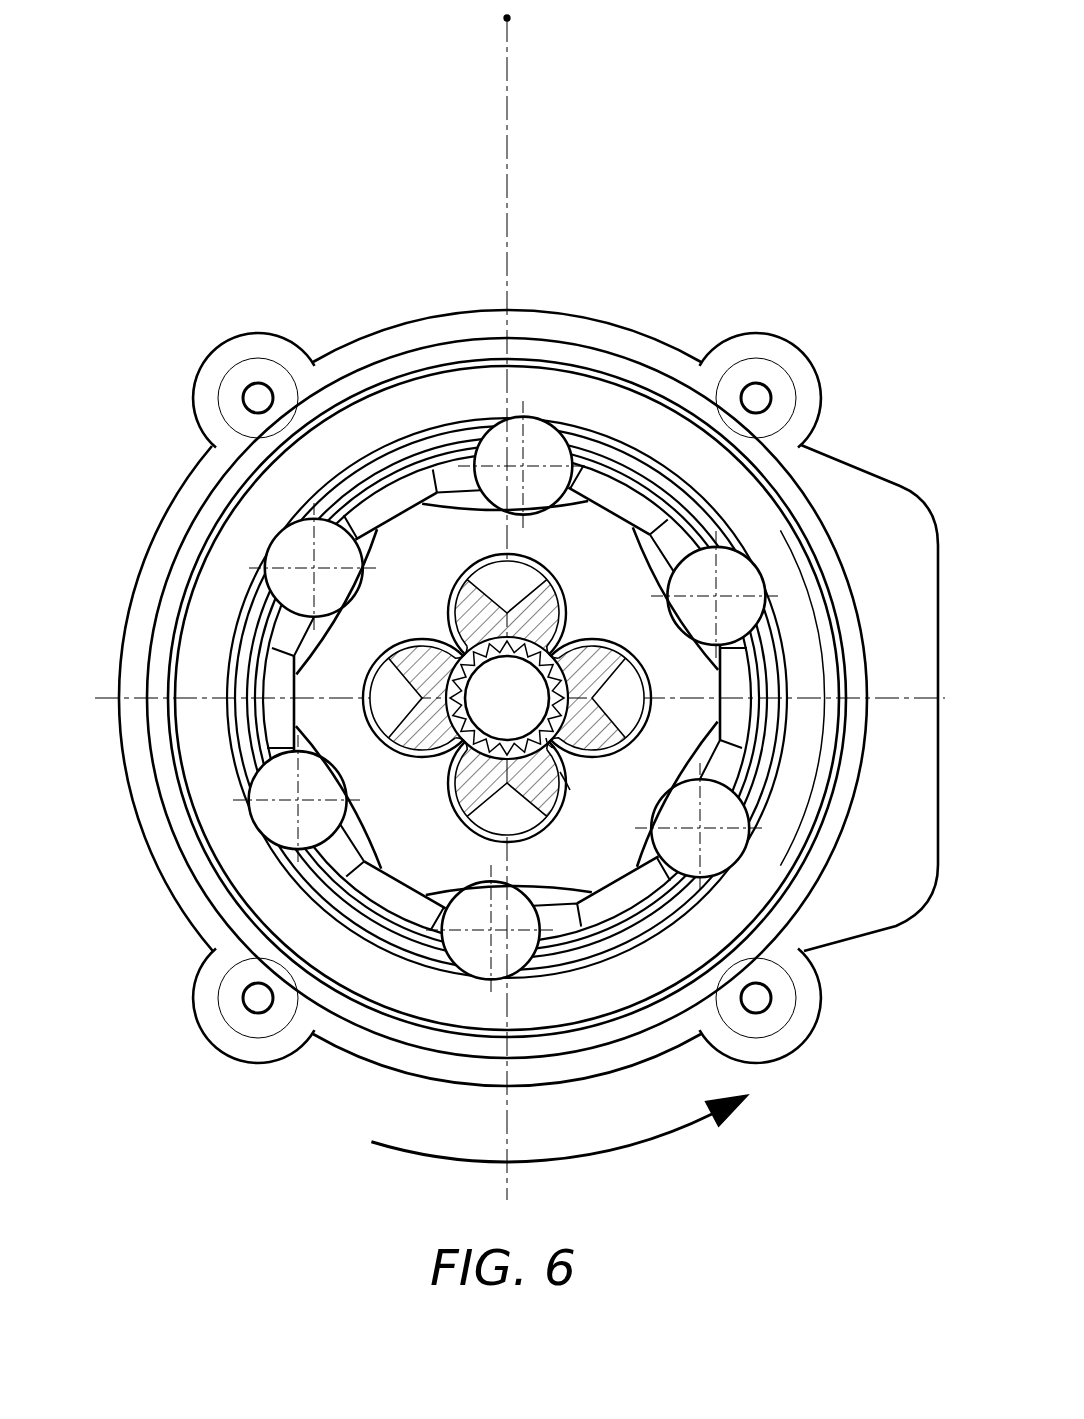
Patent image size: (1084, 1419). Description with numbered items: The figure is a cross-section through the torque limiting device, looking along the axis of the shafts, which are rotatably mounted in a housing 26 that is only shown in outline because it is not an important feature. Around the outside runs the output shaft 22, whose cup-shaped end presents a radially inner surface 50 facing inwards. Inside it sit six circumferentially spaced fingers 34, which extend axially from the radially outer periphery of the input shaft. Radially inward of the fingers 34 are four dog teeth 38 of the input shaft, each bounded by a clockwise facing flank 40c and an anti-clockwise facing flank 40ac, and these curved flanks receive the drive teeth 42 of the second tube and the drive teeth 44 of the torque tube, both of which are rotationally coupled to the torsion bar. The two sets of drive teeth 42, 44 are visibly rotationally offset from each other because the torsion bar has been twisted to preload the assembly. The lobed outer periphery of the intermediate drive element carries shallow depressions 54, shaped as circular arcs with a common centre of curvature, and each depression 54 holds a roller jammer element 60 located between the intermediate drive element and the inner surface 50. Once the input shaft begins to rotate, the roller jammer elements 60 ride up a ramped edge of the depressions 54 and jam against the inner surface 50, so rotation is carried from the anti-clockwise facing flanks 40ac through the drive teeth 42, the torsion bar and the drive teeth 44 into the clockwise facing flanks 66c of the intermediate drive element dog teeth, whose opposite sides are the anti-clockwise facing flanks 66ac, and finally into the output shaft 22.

The output shaft 22 is at (603, 348).
The housing 26 is at (438, 322).
The fingers 34 is at (322, 362).
The dog teeth 38 is at (464, 560).
The anti-clockwise facing flank 40ac is at (846, 571).
The clockwise facing flank 40c is at (578, 760).
The drive teeth 42 is at (574, 614).
The drive teeth 44 is at (566, 584).
The radially inner surface 50 is at (252, 392).
The depressions 54 is at (537, 517).
The roller jammer elements 60 is at (516, 438).
The anti-clockwise facing flank 66ac is at (688, 875).
The clockwise facing flank 66c is at (566, 780).